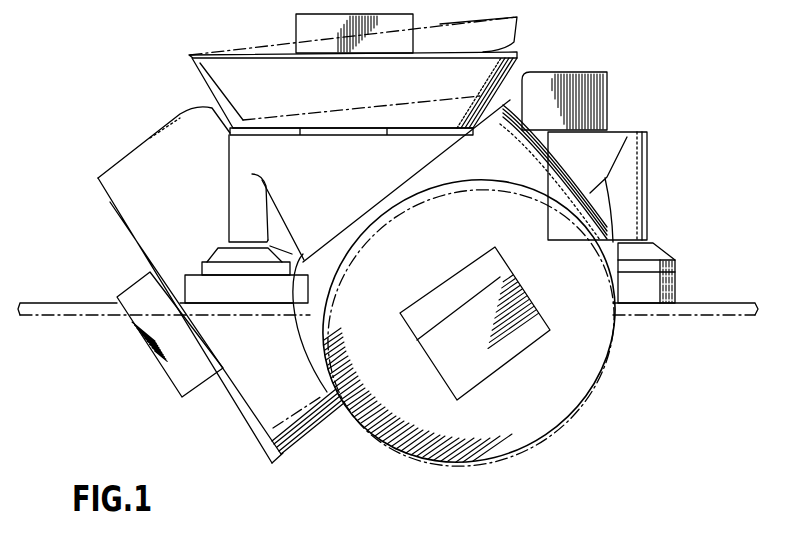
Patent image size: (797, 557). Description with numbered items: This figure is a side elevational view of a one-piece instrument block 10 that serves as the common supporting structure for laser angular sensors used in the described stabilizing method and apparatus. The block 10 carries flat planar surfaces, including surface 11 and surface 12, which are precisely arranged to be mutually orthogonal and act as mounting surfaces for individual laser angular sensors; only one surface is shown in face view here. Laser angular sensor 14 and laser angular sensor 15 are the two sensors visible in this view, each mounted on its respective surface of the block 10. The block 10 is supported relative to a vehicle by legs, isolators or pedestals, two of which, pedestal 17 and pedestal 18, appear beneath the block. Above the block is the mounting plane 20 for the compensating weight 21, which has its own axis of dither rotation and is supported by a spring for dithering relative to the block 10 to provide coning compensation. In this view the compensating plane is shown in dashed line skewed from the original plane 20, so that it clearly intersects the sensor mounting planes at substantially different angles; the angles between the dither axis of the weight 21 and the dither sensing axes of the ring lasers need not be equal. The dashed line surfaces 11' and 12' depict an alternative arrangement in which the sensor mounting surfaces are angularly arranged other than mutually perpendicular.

The instrument block 10 is at (610, 365).
The planar surface 11 is at (334, 281).
The dashed line surface 11' is at (283, 452).
The planar surface 12 is at (469, 321).
The dashed line surface 12' is at (471, 328).
The laser angular sensor 14 is at (153, 360).
The laser angular sensor 15 is at (530, 293).
The pedestal 17 is at (246, 275).
The pedestal 18 is at (657, 285).
The mounting plane 20 is at (520, 28).
The weight 21 is at (303, 26).